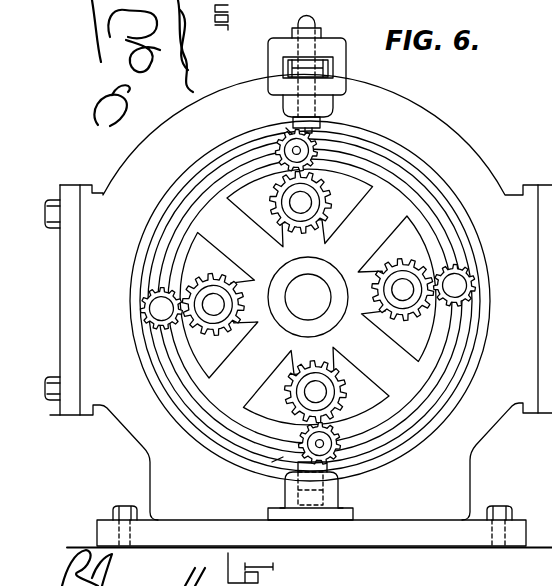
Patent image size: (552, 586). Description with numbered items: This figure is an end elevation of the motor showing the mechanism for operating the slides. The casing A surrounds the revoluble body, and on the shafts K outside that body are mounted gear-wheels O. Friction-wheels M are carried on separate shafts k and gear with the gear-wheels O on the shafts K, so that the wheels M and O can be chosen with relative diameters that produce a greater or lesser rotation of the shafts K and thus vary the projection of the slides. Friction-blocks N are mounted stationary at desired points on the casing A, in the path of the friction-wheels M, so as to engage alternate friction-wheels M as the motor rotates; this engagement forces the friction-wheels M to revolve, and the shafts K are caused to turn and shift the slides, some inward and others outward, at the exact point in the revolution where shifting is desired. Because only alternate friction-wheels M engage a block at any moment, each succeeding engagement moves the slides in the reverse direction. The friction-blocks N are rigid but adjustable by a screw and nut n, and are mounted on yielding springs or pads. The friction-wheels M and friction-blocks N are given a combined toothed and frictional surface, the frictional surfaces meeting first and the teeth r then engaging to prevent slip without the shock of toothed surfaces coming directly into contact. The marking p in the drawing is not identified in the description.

The casing A is at (421, 108).
The friction-blocks N is at (328, 463).
The screw and nut n is at (311, 66).
The guide slot p is at (333, 62).
The separate shafts k is at (323, 445).
The teeth r is at (551, 463).
The friction-wheels M is at (451, 306).
The shafts K is at (327, 388).
The gear-wheels O is at (356, 396).